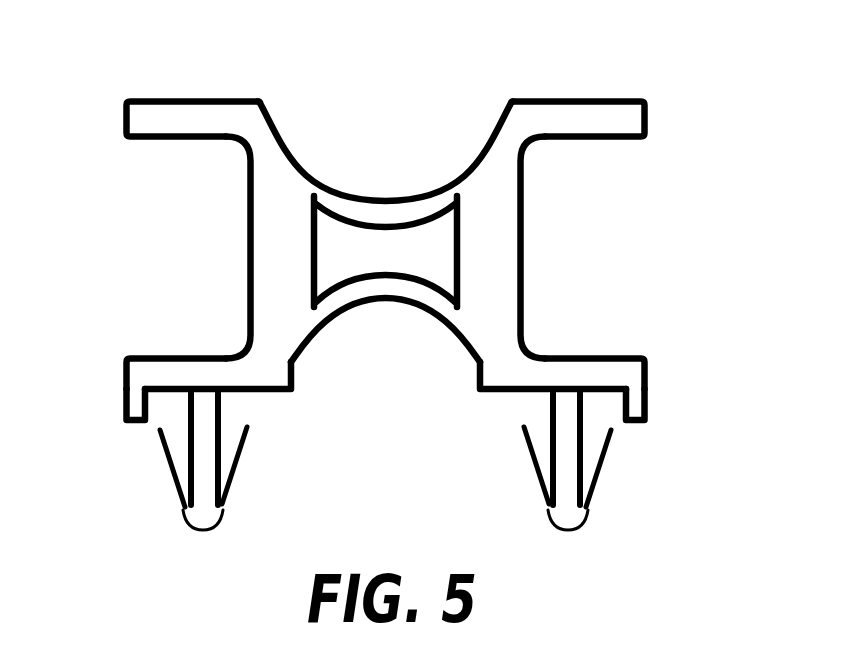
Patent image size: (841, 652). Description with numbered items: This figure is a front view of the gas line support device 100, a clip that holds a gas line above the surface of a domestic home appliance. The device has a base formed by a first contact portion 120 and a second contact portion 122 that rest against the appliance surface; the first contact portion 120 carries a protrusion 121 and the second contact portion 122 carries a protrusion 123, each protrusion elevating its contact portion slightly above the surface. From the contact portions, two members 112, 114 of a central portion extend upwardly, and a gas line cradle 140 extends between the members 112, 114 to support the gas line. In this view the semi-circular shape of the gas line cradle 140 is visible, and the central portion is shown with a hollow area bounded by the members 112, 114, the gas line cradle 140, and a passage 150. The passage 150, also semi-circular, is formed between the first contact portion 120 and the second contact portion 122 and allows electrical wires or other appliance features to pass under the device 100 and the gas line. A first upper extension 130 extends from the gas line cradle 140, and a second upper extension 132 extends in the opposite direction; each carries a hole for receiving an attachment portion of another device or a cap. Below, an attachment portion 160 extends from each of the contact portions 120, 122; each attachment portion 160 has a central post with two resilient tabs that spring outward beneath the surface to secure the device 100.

The gas line support device 100 is at (382, 278).
The member 112 is at (290, 255).
The member 114 is at (483, 250).
The first contact portion 120 is at (150, 428).
The protrusion 121 is at (124, 430).
The second contact portion 122 is at (617, 428).
The protrusion 123 is at (647, 430).
The first upper extension 130 is at (189, 108).
The second upper extension 132 is at (594, 108).
The gas line cradle 140 is at (398, 214).
The passage 150 is at (381, 288).
The attachment portion 160 is at (185, 512).